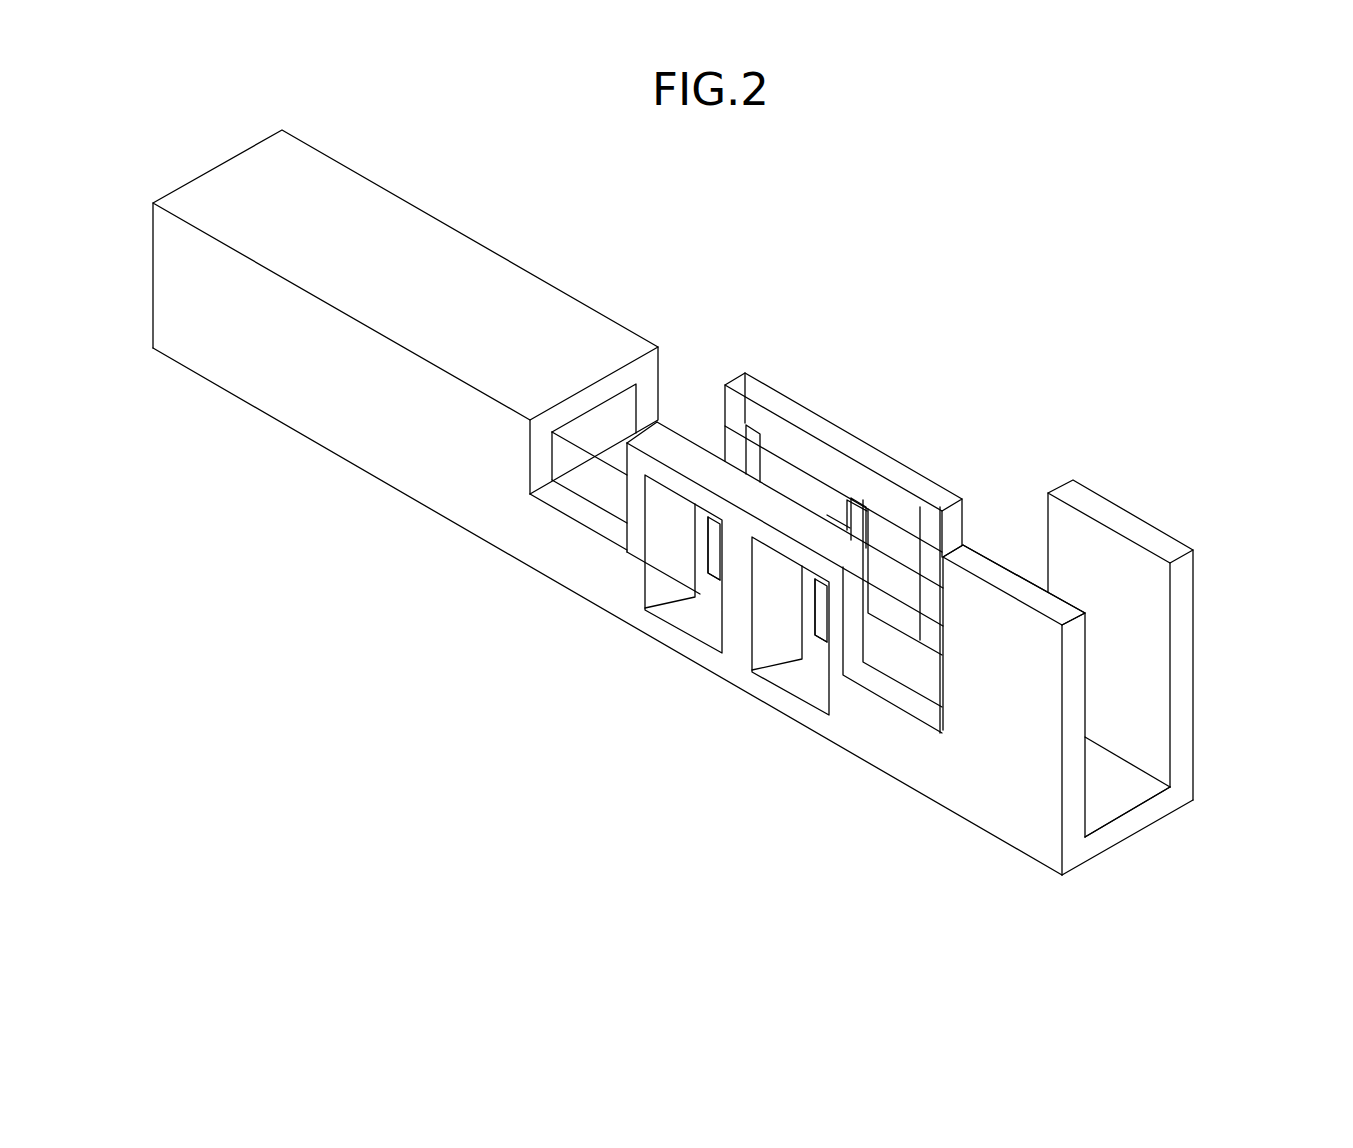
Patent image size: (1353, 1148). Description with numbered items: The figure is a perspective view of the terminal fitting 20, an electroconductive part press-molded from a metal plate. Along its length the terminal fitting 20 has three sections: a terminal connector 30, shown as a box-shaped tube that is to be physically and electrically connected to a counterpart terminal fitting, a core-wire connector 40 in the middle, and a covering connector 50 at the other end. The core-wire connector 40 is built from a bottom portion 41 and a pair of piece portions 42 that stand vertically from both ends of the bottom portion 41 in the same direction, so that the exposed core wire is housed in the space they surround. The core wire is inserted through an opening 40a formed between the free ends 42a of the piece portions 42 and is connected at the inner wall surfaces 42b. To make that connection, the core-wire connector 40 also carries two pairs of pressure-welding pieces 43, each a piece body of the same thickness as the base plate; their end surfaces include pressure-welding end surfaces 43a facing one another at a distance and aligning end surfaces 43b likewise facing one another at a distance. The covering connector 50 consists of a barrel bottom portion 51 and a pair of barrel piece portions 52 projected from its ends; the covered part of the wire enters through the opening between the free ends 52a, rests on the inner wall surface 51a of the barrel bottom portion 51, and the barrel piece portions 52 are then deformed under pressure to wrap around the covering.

The terminal fitting 20 is at (836, 192).
The terminal connector 30 is at (204, 453).
The core-wire connector 40 is at (696, 510).
The opening 40a is at (738, 470).
The bottom portion 41 is at (813, 687).
The piece portion 42 is at (872, 426).
The free end 42a is at (642, 442).
The inner wall surface 42b is at (665, 480).
The pressure-welding piece 43 is at (745, 467).
The pressure-welding end surface 43a is at (718, 547).
The aligning end surface 43b is at (740, 470).
The covering connector 50 is at (1025, 661).
The barrel bottom portion 51 is at (991, 800).
The inner wall surface 51a is at (1117, 800).
The barrel piece portion 52 is at (1163, 516).
The free end 52a is at (1028, 592).